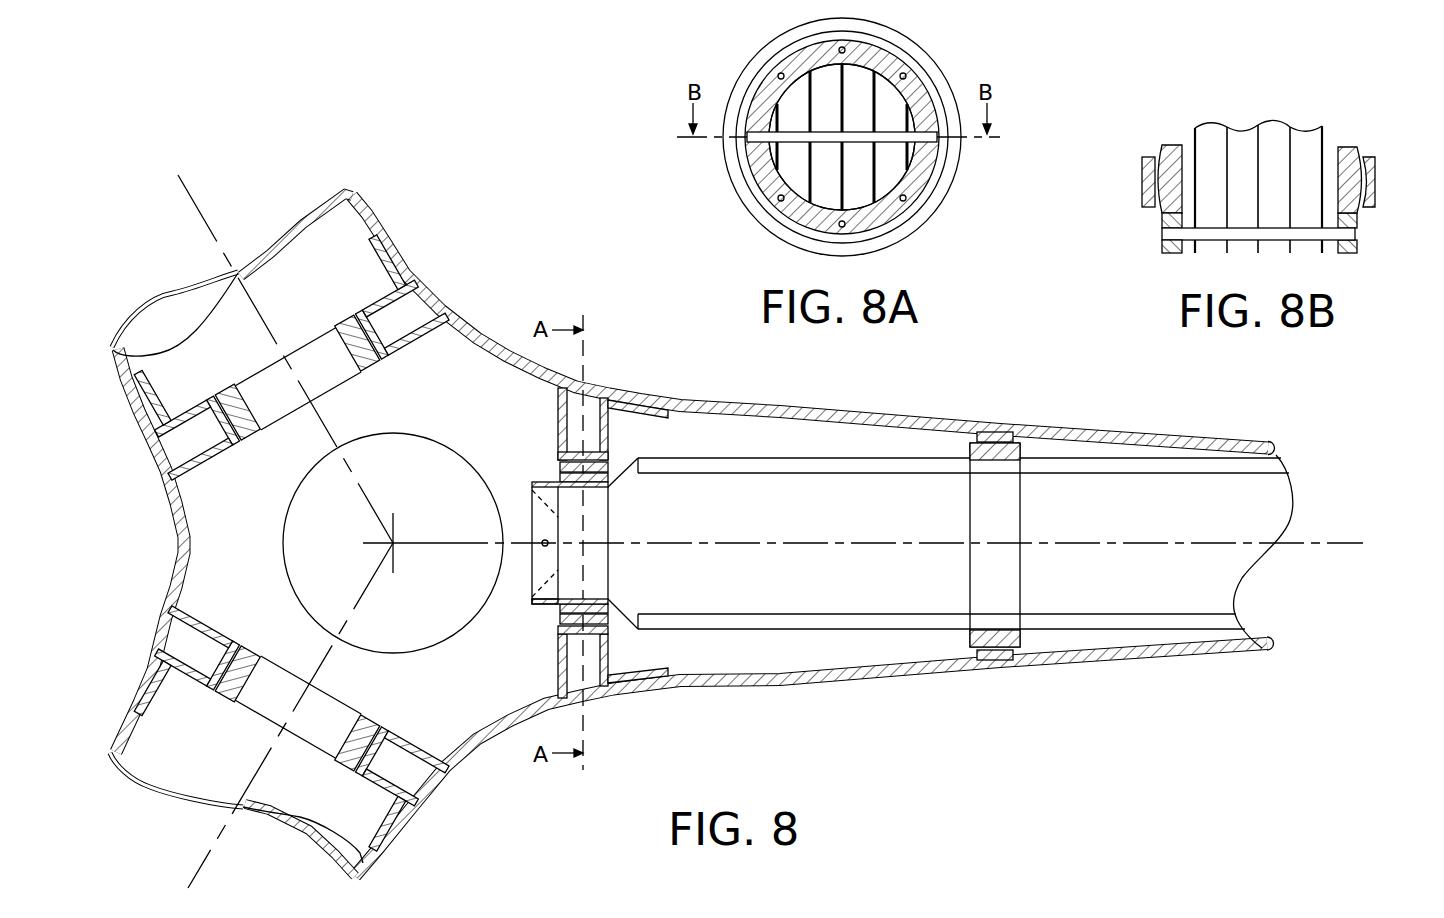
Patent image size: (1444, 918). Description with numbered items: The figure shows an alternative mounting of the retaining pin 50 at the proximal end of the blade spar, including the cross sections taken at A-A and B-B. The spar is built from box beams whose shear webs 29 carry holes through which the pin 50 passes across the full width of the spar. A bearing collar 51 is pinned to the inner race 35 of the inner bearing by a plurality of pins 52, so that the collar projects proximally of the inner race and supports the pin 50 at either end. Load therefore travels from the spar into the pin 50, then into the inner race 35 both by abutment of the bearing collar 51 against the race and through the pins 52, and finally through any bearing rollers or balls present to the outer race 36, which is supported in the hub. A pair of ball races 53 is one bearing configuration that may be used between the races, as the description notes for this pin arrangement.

In FIG. 8B, the shear webs 29 is at (1195, 132).
In FIG. 8B, the inner race 35 is at (1358, 148).
In FIG. 8B, the outer race 36 is at (1375, 182).
In FIG. 8, the retaining pin 50 is at (544, 540).
In FIG. 8A, the retaining pin 50 is at (762, 142).
In FIG. 8B, the retaining pin 50 is at (1163, 233).
In FIG. 8, the bearing collar 51 is at (533, 609).
In FIG. 8B, the bearing collar 51 is at (1163, 252).
In FIG. 8, the pins 52 is at (591, 483).
In FIG. 8, the lower clamp flange 53 is at (591, 600).